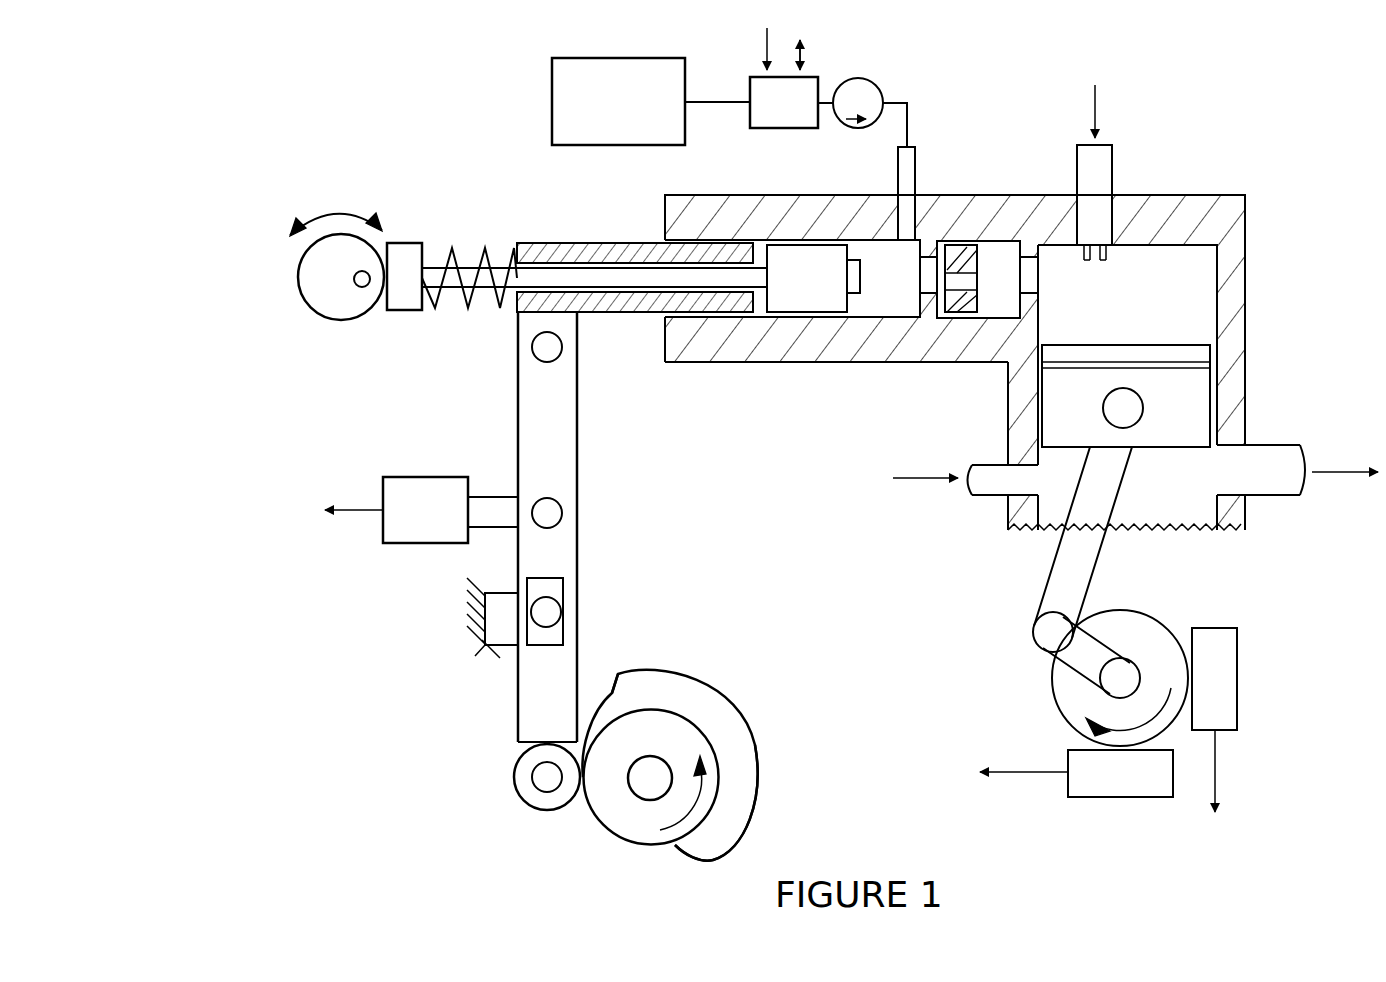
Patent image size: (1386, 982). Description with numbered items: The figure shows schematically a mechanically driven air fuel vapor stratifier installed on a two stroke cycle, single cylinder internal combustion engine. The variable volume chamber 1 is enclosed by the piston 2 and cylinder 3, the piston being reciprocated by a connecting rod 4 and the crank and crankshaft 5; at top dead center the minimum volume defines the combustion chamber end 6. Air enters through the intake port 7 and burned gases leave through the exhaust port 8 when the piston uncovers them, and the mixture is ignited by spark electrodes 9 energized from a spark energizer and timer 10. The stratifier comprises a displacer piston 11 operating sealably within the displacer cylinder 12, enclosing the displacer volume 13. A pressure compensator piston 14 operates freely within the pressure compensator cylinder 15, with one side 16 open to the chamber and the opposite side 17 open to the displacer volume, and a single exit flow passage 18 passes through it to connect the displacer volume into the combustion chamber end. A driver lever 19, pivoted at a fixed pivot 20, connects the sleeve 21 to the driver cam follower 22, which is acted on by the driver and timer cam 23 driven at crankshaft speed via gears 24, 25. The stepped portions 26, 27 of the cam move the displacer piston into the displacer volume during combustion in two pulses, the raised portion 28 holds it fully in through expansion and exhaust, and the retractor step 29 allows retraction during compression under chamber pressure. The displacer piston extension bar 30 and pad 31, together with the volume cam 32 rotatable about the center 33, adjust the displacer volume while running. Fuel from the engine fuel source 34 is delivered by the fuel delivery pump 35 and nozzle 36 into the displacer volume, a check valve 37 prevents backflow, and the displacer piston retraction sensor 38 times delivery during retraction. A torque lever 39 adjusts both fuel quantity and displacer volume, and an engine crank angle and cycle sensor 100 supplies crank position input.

The variable volume chamber 1 is at (1180, 298).
The piston 2 is at (1180, 400).
The cylinder 3 is at (1218, 411).
The connecting rod 4 is at (1058, 570).
The crank and crankshaft 5 is at (1088, 659).
The combustion chamber end 6 is at (1178, 267).
The intake port 7 is at (1000, 486).
The exhaust port 8 is at (1247, 470).
The spark electrodes 9 is at (1093, 226).
The spark energizer and timer 10 is at (1122, 783).
The displacer piston 11 is at (765, 318).
The displacer cylinder 12 is at (776, 193).
The displacer volume 13 is at (870, 295).
The pressure compensator piston 14 is at (958, 268).
The pressure compensator cylinder 15 is at (980, 320).
The one side of pressure compensator piston 16 is at (975, 258).
The opposite side of pressure compensator piston 17 is at (935, 305).
The exit flow passage 18 is at (933, 257).
The driver lever 19 is at (545, 453).
The fixed pivot 20 is at (545, 612).
The sleeve 21 is at (640, 305).
The driver cam follower 22 is at (527, 793).
The driver and timer cam 23 is at (718, 735).
The gear 24 is at (1130, 630).
The gear 25 is at (675, 697).
The stepped portion of cam 26 is at (540, 742).
The stepped portion of cam 27 is at (614, 690).
The raised portion of cam 28 is at (752, 800).
The retractor step 29 is at (678, 850).
The displacer piston extension bar 30 is at (617, 278).
The pad 31 is at (397, 268).
The volume cam 32 is at (312, 263).
The center 33 is at (357, 278).
The engine fuel source 34 is at (552, 94).
The fuel delivery pump 35 is at (785, 103).
The nozzle 36 is at (898, 170).
The check valve 37 is at (873, 82).
The displacer piston retraction sensor 38 is at (433, 487).
The torque lever 39 is at (805, 56).
The engine crank angle and cycle sensor 100 is at (1210, 676).